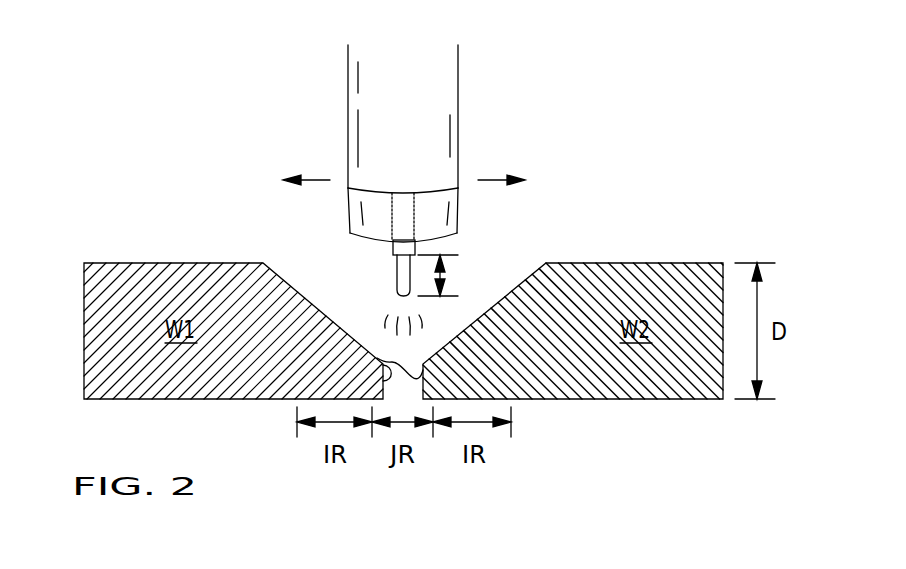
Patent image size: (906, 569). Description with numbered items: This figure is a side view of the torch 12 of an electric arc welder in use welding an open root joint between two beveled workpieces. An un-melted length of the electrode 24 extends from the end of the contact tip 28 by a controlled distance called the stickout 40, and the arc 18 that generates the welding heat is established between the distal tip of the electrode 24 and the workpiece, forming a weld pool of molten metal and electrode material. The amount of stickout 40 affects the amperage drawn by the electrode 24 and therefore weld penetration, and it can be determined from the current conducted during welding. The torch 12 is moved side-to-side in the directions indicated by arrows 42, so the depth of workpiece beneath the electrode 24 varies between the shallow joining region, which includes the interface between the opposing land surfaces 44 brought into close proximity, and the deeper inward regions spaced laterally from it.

The torch 12 is at (332, 65).
The arrows 42 is at (313, 179).
The contact tip 28 is at (392, 249).
The electrode 24 is at (398, 278).
The stickout 40 is at (447, 277).
The arc 18 is at (387, 317).
The land surfaces 44 is at (378, 361).